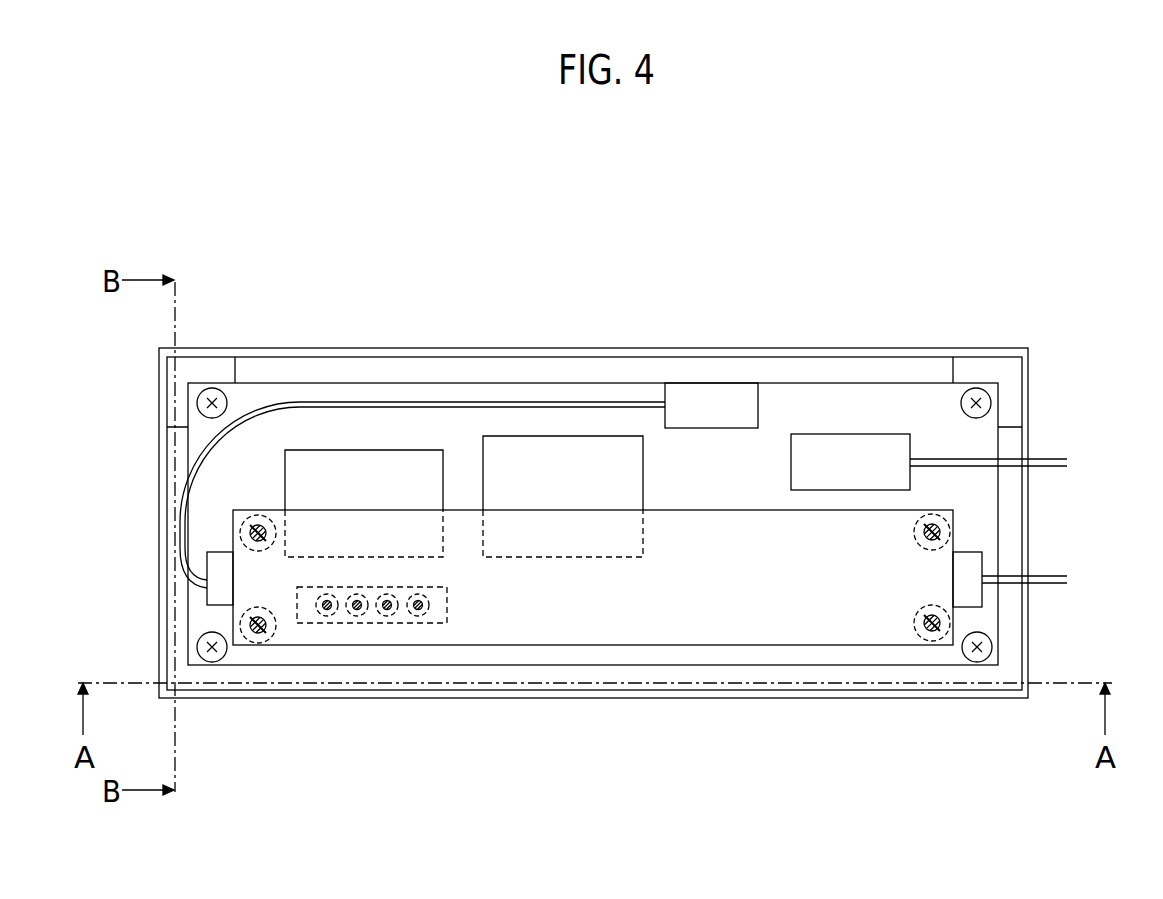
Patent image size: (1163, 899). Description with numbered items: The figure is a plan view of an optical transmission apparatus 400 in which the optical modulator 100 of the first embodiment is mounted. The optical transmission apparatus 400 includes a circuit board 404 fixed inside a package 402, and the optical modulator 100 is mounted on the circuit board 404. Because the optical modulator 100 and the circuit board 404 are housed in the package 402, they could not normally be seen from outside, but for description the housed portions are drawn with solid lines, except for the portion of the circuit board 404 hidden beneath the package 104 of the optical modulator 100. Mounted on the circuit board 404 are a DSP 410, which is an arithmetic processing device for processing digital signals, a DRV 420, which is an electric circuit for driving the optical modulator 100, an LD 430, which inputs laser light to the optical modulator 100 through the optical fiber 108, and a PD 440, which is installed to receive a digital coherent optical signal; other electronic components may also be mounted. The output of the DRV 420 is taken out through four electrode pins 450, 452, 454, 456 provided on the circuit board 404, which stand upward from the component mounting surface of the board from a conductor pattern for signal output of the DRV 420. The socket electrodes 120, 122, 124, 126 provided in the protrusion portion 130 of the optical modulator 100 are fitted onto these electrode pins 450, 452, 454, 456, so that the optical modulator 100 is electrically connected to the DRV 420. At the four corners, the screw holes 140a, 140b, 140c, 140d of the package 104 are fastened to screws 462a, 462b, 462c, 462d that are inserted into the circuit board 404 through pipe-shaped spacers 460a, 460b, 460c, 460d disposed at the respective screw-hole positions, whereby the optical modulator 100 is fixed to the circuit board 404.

The optical transmission apparatus 400 is at (222, 176).
The package 402 is at (216, 348).
The circuit board 404 is at (260, 400).
The optical fiber 108 is at (617, 396).
The LD (Laser Diode) 430 is at (703, 402).
The PD (Photo Diode) 440 is at (845, 460).
The DRV (Driver) 420 is at (363, 470).
The DSP (Digital Signal Processor) 410 is at (537, 475).
The optical modulator 100 is at (702, 638).
The package 104 is at (714, 832).
The protrusion portion 130 is at (380, 613).
The socket electrode 120 is at (320, 614).
The socket electrode 122 is at (350, 614).
The socket electrode 124 is at (387, 610).
The socket electrode 126 is at (410, 614).
The electrode pin 450 is at (327, 610).
The electrode pin 452 is at (357, 610).
The electrode pin 454 is at (418, 610).
The electrode pin 456 is at (425, 611).
The screw hole 140a is at (248, 525).
The screw hole 140b is at (255, 641).
The screw hole 140c is at (930, 641).
The screw hole 140d is at (940, 515).
The pipe-shaped spacer 460a is at (245, 530).
The pipe-shaped spacer 460b is at (245, 627).
The pipe-shaped spacer 460c is at (937, 635).
The pipe-shaped spacer 460d is at (947, 520).
The screw 462a is at (250, 535).
The screw 462b is at (245, 616).
The screw 462c is at (950, 620).
The screw 462d is at (950, 533).